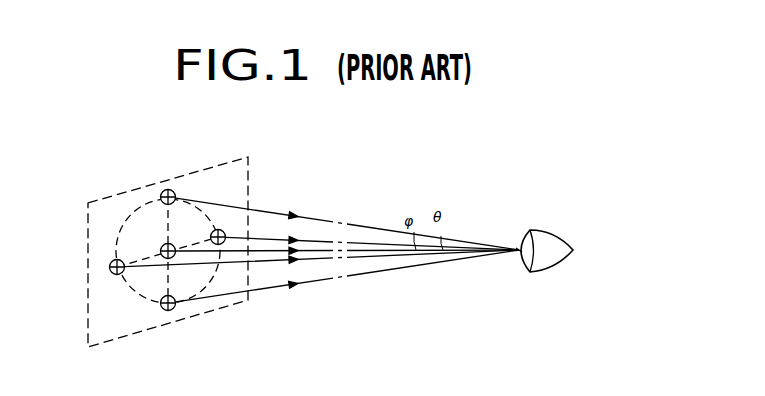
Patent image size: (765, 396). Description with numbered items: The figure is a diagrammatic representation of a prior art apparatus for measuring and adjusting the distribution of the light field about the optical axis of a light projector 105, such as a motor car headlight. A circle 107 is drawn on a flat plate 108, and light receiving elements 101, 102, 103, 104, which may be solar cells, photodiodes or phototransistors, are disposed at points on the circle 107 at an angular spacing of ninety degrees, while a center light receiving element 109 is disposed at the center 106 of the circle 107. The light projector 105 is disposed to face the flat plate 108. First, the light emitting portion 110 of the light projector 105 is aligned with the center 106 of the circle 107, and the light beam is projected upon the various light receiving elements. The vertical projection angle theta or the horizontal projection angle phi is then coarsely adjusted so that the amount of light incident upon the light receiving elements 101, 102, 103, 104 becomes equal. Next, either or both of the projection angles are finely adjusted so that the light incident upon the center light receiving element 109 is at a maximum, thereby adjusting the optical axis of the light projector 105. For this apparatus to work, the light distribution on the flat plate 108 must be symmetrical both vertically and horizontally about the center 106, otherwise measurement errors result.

The light receiving element 101 is at (167, 189).
The light receiving element 102 is at (224, 231).
The light receiving element 103 is at (168, 311).
The light receiving element 104 is at (110, 267).
The light projector 105 is at (545, 238).
The center 106 is at (160, 252).
The circle 107 is at (128, 215).
The flat plate 108 is at (212, 165).
The center light receiving element 109 is at (163, 258).
The light emitting portion 110 is at (522, 260).